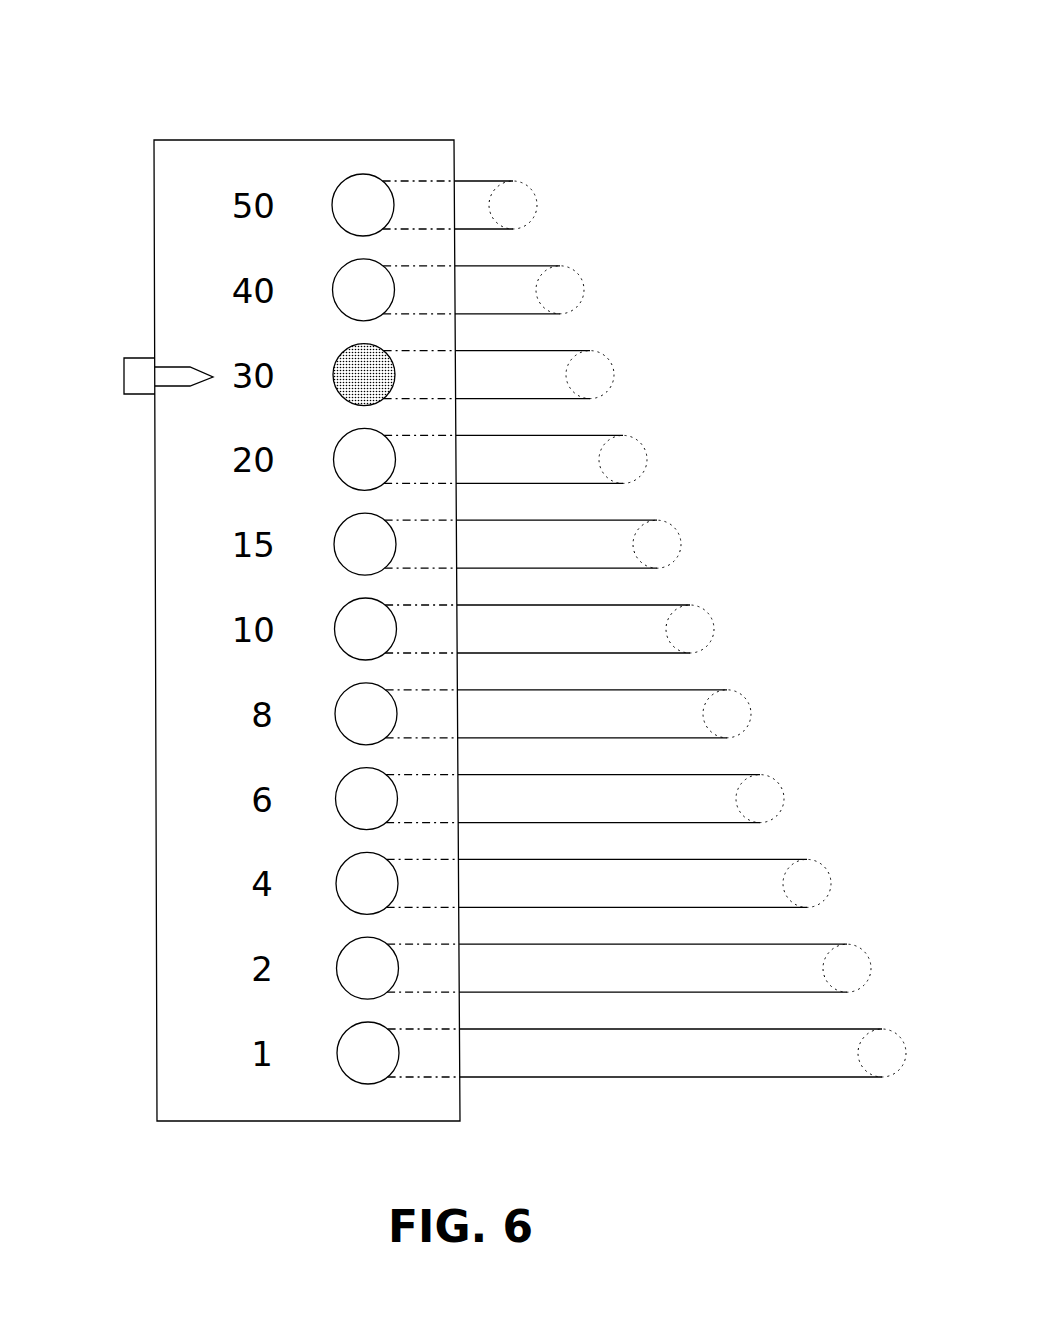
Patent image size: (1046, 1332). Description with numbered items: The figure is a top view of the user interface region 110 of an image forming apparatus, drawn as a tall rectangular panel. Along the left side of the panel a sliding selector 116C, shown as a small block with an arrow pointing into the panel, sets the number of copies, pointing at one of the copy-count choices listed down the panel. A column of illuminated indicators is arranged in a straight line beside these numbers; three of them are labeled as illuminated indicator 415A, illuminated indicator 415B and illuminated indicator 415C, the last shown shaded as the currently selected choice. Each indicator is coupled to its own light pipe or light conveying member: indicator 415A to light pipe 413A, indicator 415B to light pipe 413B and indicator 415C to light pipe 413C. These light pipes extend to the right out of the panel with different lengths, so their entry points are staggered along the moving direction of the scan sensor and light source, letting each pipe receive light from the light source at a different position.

The user interface region 110 is at (176, 147).
The sliding selector 116C is at (137, 358).
The illuminated indicator 415A is at (373, 175).
The illuminated indicator 415B is at (340, 266).
The illuminated indicator 415C is at (336, 392).
The light pipe or light conveying member 413A is at (538, 208).
The light pipe or light conveying member 413B is at (582, 302).
The light pipe or light conveying member 413C is at (616, 392).